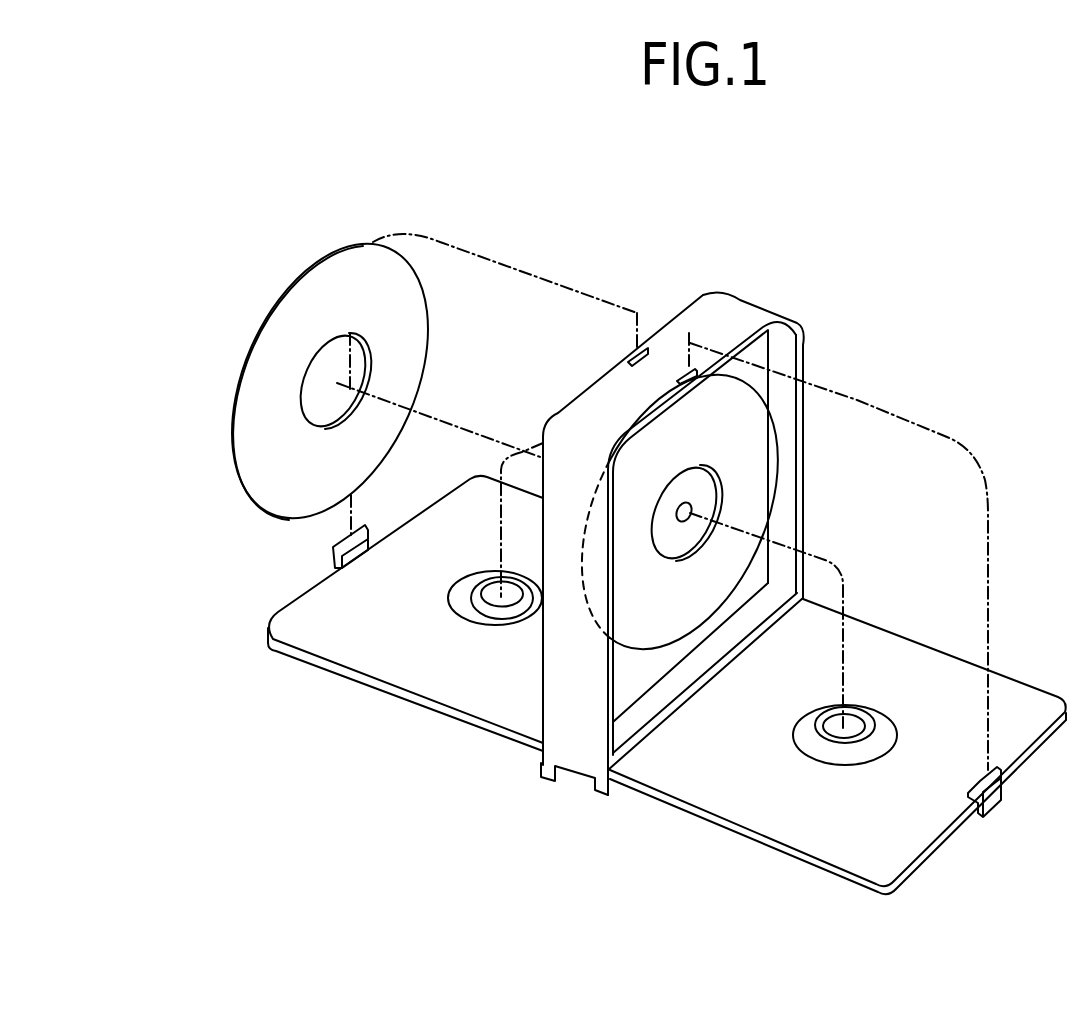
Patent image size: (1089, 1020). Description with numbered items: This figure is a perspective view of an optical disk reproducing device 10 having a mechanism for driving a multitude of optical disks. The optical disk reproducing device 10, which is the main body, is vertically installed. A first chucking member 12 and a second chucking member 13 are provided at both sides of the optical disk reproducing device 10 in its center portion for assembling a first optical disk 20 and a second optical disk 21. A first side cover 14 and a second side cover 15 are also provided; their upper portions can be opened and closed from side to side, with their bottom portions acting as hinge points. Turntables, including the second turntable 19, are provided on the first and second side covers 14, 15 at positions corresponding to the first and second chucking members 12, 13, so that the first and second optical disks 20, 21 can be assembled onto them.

The optical disk reproducing device 10 is at (774, 284).
The first chucking member 12 is at (503, 597).
The second chucking member 13 is at (843, 732).
The first side cover 14 is at (332, 623).
The second side cover 15 is at (937, 827).
The second turntable 19 is at (693, 485).
The first optical disk 20 is at (278, 487).
The second optical disk 21 is at (658, 633).